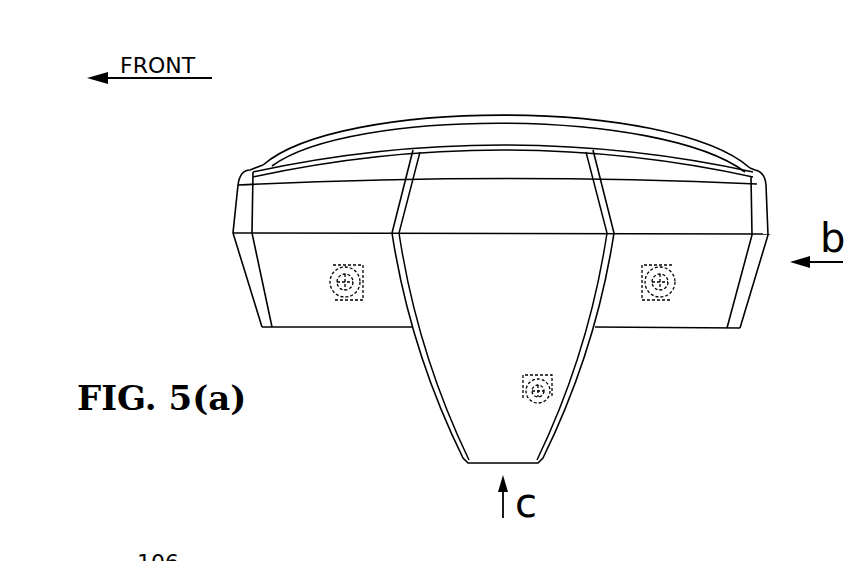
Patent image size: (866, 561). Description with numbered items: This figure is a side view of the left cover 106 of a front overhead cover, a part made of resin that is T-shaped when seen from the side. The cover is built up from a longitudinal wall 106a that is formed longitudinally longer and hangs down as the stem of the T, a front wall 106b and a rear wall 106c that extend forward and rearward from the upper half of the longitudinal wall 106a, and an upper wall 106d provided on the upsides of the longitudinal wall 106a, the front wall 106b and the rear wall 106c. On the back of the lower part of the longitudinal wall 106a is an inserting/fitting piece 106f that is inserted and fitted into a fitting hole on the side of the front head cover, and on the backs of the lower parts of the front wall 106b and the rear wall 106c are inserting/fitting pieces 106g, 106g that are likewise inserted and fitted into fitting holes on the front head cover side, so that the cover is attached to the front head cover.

The left cover 106 is at (217, 192).
The longitudinal wall 106a is at (452, 380).
The front wall 106b is at (267, 270).
The rear wall 106c is at (727, 297).
The upper wall 106d is at (508, 133).
The inserting/fitting piece 106f is at (550, 392).
The inserting/fitting pieces 106g is at (335, 297).